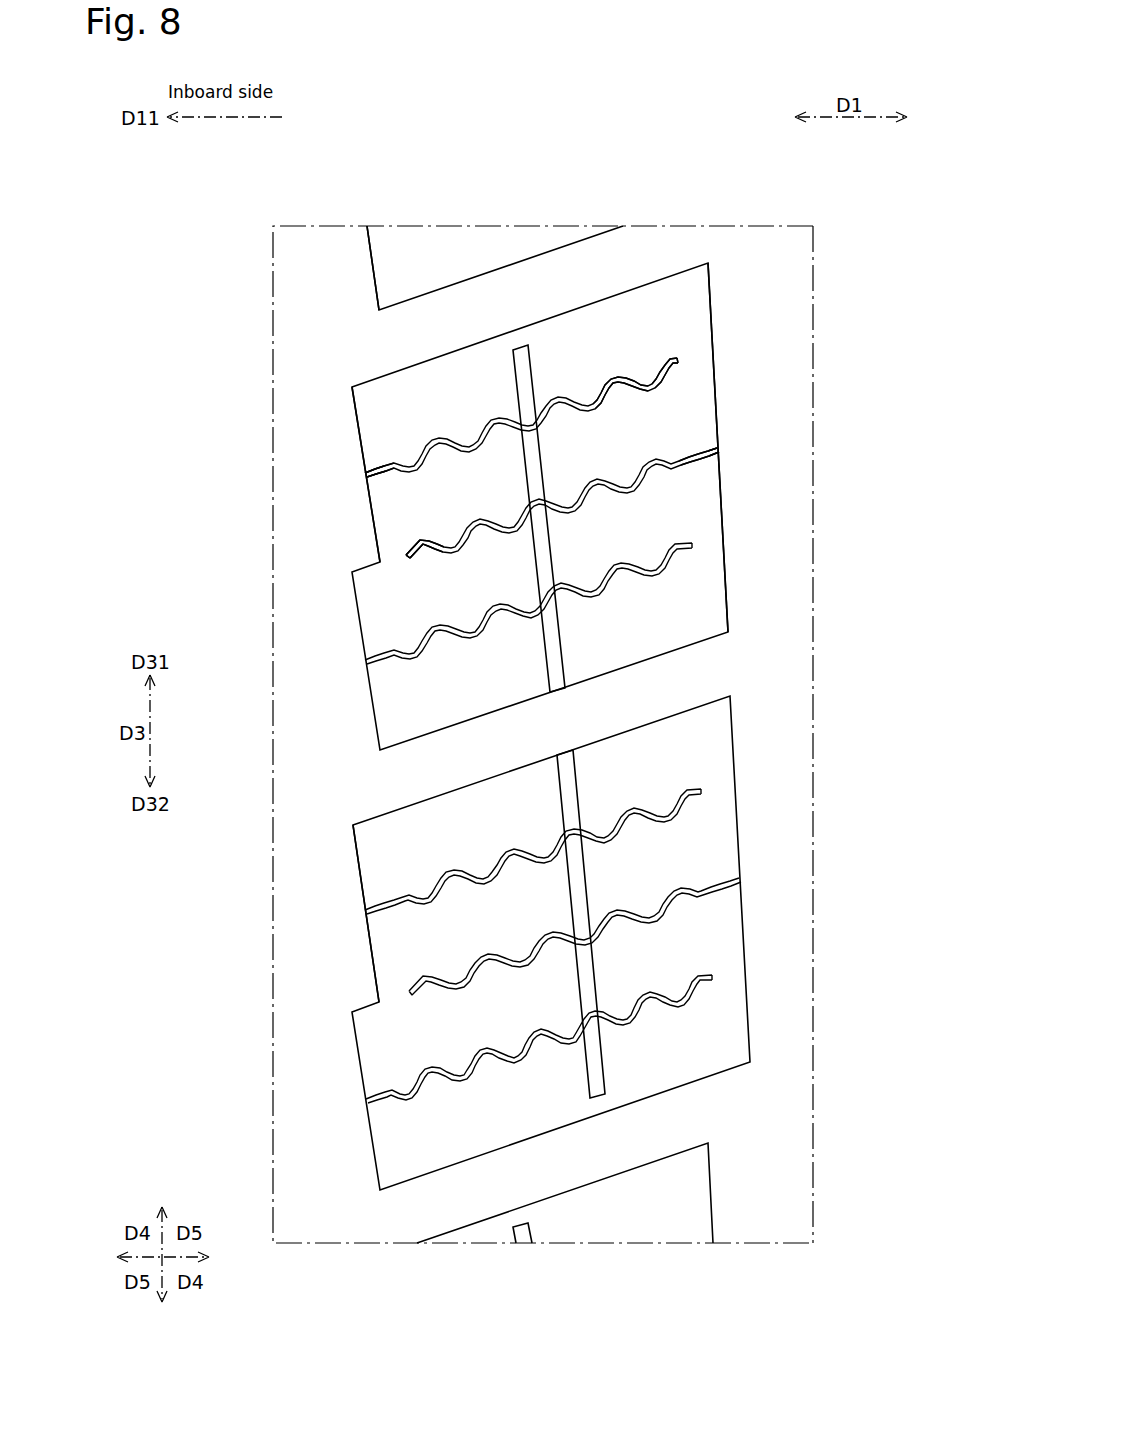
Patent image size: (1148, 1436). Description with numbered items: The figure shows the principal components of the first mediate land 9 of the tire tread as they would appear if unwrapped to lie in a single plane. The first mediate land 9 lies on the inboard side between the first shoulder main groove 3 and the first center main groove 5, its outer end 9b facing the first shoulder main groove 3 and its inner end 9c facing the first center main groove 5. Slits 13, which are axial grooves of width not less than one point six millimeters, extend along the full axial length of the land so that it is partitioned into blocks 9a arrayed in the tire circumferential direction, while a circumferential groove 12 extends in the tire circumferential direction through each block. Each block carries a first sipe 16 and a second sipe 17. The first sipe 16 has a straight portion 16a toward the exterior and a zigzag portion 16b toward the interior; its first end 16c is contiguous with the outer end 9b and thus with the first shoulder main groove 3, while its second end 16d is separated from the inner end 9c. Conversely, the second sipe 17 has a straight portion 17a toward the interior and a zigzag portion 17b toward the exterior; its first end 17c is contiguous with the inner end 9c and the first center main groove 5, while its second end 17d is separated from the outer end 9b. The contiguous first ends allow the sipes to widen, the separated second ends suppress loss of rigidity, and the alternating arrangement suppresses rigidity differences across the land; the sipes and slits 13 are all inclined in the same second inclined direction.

The first shoulder main groove 3 is at (313, 257).
The first center main groove 5 is at (765, 253).
The first mediate land 9 is at (535, 235).
The block 9a is at (378, 408).
The outer end 9b is at (372, 278).
The inner end 9c is at (710, 282).
The circumferential groove 12 is at (528, 358).
The slit 13 is at (365, 352).
The first sipe 16 is at (653, 393).
The straight portion 16a is at (397, 452).
The zigzag portion 16b is at (640, 368).
The first end 16c is at (367, 473).
The second end 16d is at (683, 352).
The second sipe 17 is at (653, 477).
The straight portion 17a is at (680, 452).
The zigzag portion 17b is at (420, 524).
The first end 17c is at (720, 445).
The second end 17d is at (410, 555).